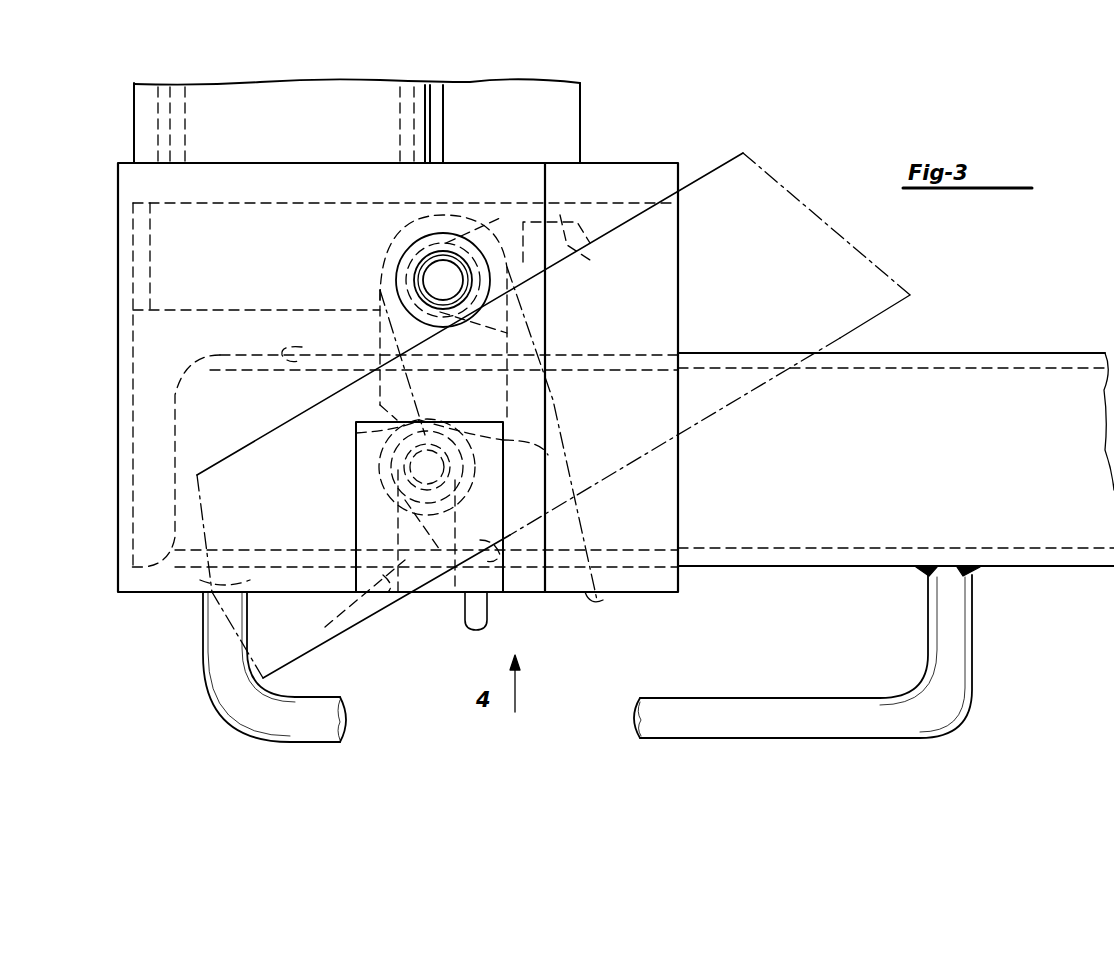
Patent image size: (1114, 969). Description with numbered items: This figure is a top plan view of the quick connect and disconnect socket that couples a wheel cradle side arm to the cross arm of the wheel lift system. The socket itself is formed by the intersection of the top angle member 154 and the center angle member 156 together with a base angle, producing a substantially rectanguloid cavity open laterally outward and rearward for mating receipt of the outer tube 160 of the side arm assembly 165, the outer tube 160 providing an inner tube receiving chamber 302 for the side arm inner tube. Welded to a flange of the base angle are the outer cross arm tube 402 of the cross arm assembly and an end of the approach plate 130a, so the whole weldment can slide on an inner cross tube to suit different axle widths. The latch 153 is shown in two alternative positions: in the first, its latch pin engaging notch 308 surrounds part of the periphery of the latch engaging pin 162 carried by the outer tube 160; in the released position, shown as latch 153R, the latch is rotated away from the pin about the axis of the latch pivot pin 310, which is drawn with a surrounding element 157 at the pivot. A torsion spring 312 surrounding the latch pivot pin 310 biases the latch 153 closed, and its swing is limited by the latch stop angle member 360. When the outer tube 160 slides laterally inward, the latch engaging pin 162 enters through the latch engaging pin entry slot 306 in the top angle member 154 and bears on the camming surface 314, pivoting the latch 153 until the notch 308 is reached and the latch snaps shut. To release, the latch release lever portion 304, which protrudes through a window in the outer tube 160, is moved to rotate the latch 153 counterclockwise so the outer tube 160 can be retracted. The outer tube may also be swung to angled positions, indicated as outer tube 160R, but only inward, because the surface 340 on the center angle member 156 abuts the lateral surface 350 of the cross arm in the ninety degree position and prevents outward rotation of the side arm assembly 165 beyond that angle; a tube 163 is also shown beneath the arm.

The outer cross arm tube 402 is at (238, 92).
The approach plate 130a is at (492, 92).
The torsion spring 312 is at (447, 213).
The bushing 157 is at (412, 252).
The latch pivot pin 310 is at (440, 279).
The surface 340 is at (309, 344).
The lateral surface 350 is at (290, 418).
The rod in rotated position 160R is at (762, 180).
The pin in rotated position 153R is at (555, 402).
The latch stop angle member 360 is at (590, 245).
The latch pin engaging notch 308 is at (585, 447).
The latch engaging pin 162 is at (378, 478).
The latch 153 is at (400, 536).
The center angle member 156 is at (135, 496).
The top angle member 154 is at (138, 594).
The latch engaging pin entry slot 306 is at (302, 599).
The camming surface 314 is at (464, 565).
The latch release lever portion 304 is at (476, 630).
The inner tube receiving chamber 302 is at (940, 370).
The side arm assembly 165 is at (930, 345).
The outer tube 160 is at (795, 572).
The tube 163 is at (760, 697).